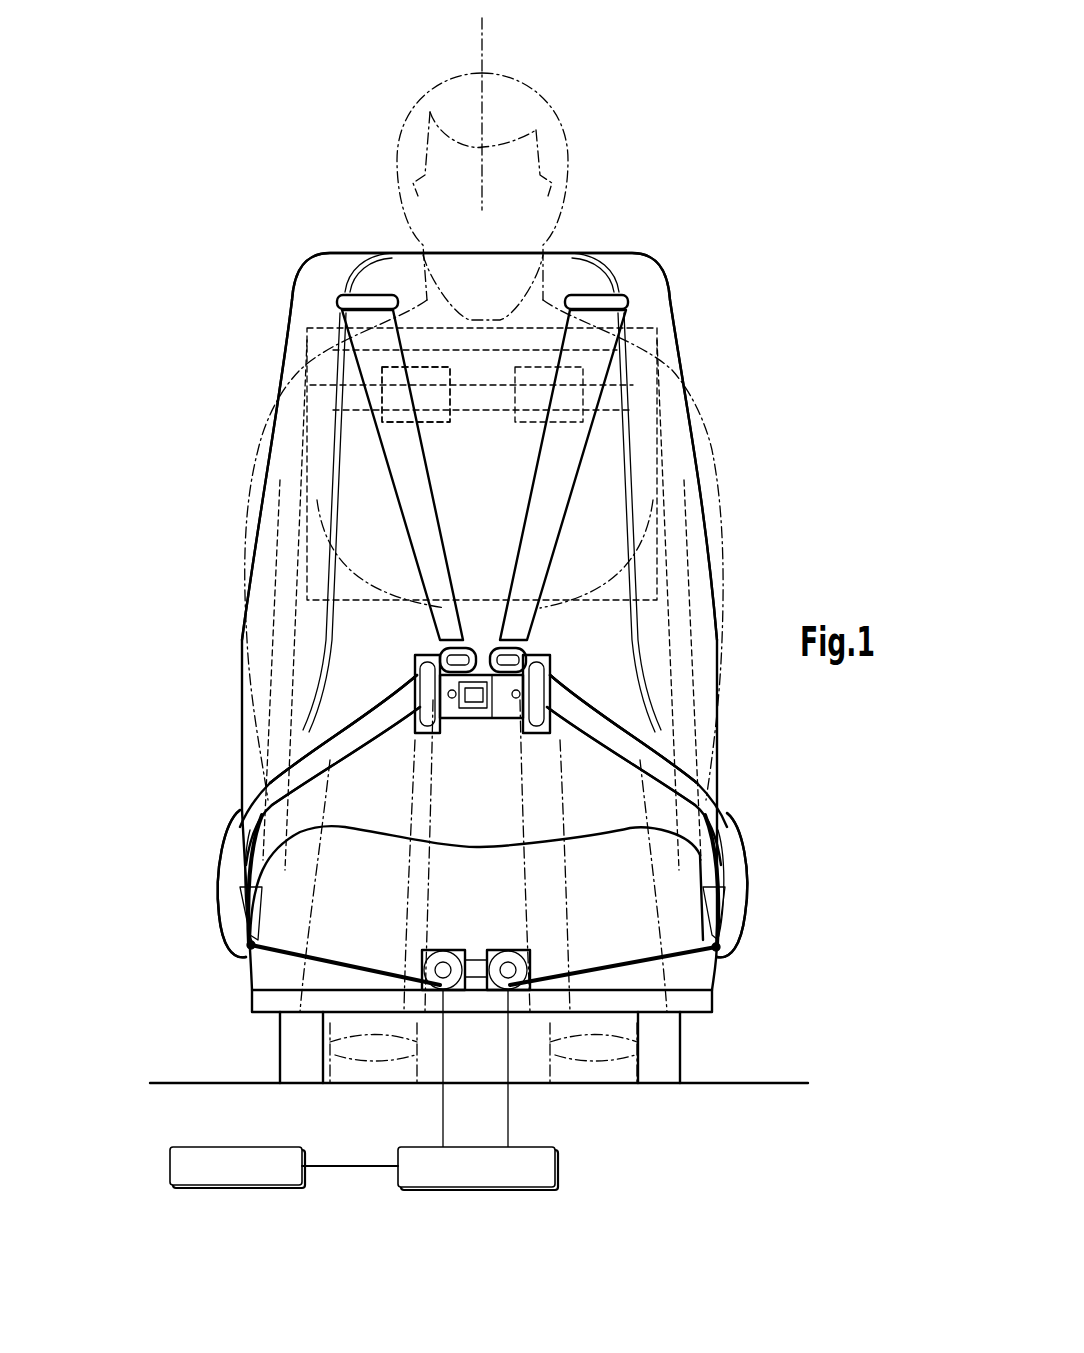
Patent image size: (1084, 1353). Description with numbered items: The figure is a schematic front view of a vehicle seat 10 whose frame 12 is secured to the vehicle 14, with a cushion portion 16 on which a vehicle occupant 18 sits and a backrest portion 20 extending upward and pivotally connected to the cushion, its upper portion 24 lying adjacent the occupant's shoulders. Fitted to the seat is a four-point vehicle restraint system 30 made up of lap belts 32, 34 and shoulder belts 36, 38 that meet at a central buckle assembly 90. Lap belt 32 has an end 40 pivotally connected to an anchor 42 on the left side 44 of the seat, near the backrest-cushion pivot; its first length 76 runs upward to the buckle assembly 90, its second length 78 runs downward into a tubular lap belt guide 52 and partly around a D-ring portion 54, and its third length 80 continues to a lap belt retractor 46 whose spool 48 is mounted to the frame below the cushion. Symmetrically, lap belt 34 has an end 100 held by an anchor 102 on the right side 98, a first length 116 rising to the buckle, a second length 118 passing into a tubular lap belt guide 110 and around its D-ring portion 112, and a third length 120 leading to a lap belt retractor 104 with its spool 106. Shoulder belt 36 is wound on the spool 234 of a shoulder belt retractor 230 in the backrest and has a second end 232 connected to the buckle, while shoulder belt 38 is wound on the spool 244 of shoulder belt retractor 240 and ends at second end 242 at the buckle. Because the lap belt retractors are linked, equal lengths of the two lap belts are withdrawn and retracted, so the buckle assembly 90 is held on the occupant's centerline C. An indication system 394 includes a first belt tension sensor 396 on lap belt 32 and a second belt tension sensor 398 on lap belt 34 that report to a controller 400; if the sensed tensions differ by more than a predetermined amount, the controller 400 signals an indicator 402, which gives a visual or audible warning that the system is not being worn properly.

The centerline C is at (484, 52).
The vehicle seat 10 is at (291, 300).
The frame 12 is at (283, 625).
The vehicle 14 is at (708, 1086).
The cushion portion 16 is at (481, 847).
The vehicle occupant 18 is at (560, 95).
The backrest portion 20 is at (650, 268).
The upper portion 24 is at (292, 347).
The vehicle restraint system 30 is at (793, 422).
The lap belt 32 is at (653, 742).
The lap belt 34 is at (292, 767).
The shoulder belt 36 is at (540, 523).
The shoulder belt 38 is at (400, 478).
The end 40 is at (728, 870).
The anchor 42 is at (712, 905).
The left side 44 is at (698, 463).
The lap belt retractor 46 is at (537, 977).
The spool 48 is at (497, 987).
The tubular lap belt guide 52 is at (748, 832).
The D-ring portion 54 is at (730, 952).
The first length 76 is at (703, 817).
The second length 78 is at (655, 688).
The third length 80 is at (657, 963).
The buckle assembly 90 is at (437, 656).
The right side 98 is at (275, 377).
The end 100 is at (236, 835).
The anchor 102 is at (250, 902).
The lap belt retractor 104 is at (455, 950).
The spool 106 is at (430, 990).
The tubular lap belt guide 110 is at (215, 855).
The D-ring portion 112 is at (255, 922).
The first length 116 is at (275, 790).
The second length 118 is at (355, 700).
The third length 120 is at (373, 978).
The shoulder belt retractor 230 is at (543, 393).
The second end 232 is at (508, 655).
The spool 234 is at (537, 420).
The shoulder belt retractor 240 is at (427, 393).
The second end 242 is at (456, 648).
The spool 244 is at (433, 420).
The indication system 394 is at (357, 1208).
The first belt tension sensor 396 is at (518, 952).
The second belt tension sensor 398 is at (425, 985).
The controller 400 is at (487, 1189).
The indicator 402 is at (230, 1187).